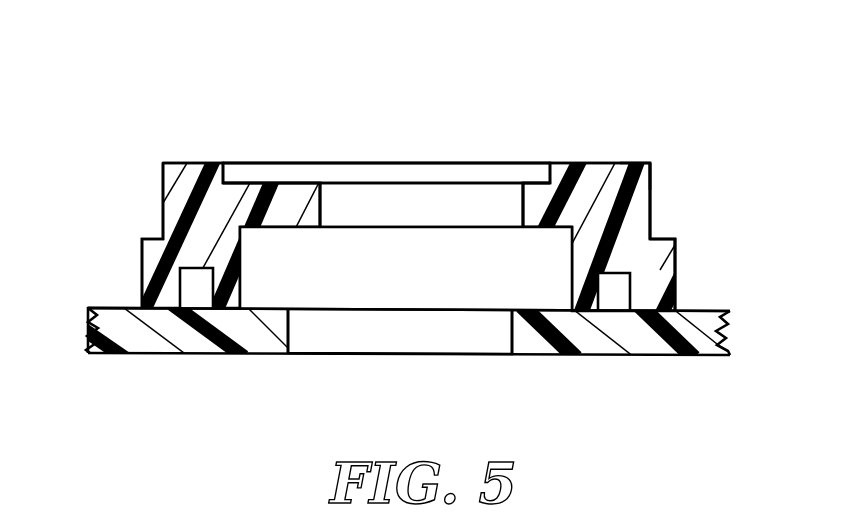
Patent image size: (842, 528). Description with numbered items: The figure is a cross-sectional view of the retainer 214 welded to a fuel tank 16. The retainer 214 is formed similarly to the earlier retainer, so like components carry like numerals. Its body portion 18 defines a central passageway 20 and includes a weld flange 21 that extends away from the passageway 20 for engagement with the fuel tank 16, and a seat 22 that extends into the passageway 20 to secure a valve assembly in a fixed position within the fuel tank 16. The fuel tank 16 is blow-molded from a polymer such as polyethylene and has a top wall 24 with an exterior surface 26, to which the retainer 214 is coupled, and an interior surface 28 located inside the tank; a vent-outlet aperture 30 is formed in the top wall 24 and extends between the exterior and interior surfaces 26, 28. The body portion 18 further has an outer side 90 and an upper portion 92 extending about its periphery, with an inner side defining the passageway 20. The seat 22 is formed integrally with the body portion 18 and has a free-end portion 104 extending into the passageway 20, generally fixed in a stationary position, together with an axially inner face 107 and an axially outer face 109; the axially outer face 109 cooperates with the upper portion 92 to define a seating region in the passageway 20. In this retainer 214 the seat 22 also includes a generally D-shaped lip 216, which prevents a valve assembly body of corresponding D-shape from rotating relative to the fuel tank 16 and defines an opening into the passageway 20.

The fuel tank 16 is at (90, 363).
The body portion 18 is at (158, 218).
The central passageway 20 is at (442, 212).
The weld flange 21 is at (677, 253).
The seat 22 is at (257, 187).
The top wall 24 is at (723, 333).
The exterior surface 26 is at (100, 308).
The interior surface 28 is at (153, 353).
The vent-outlet aperture 30 is at (457, 358).
The outer side 90 is at (652, 188).
The upper portion 92 is at (645, 161).
The free-end portion 104 is at (325, 208).
The axially inner face 107 is at (277, 232).
The axially outer face 109 is at (258, 187).
The retainer 214 is at (151, 206).
The lip 216 is at (328, 183).